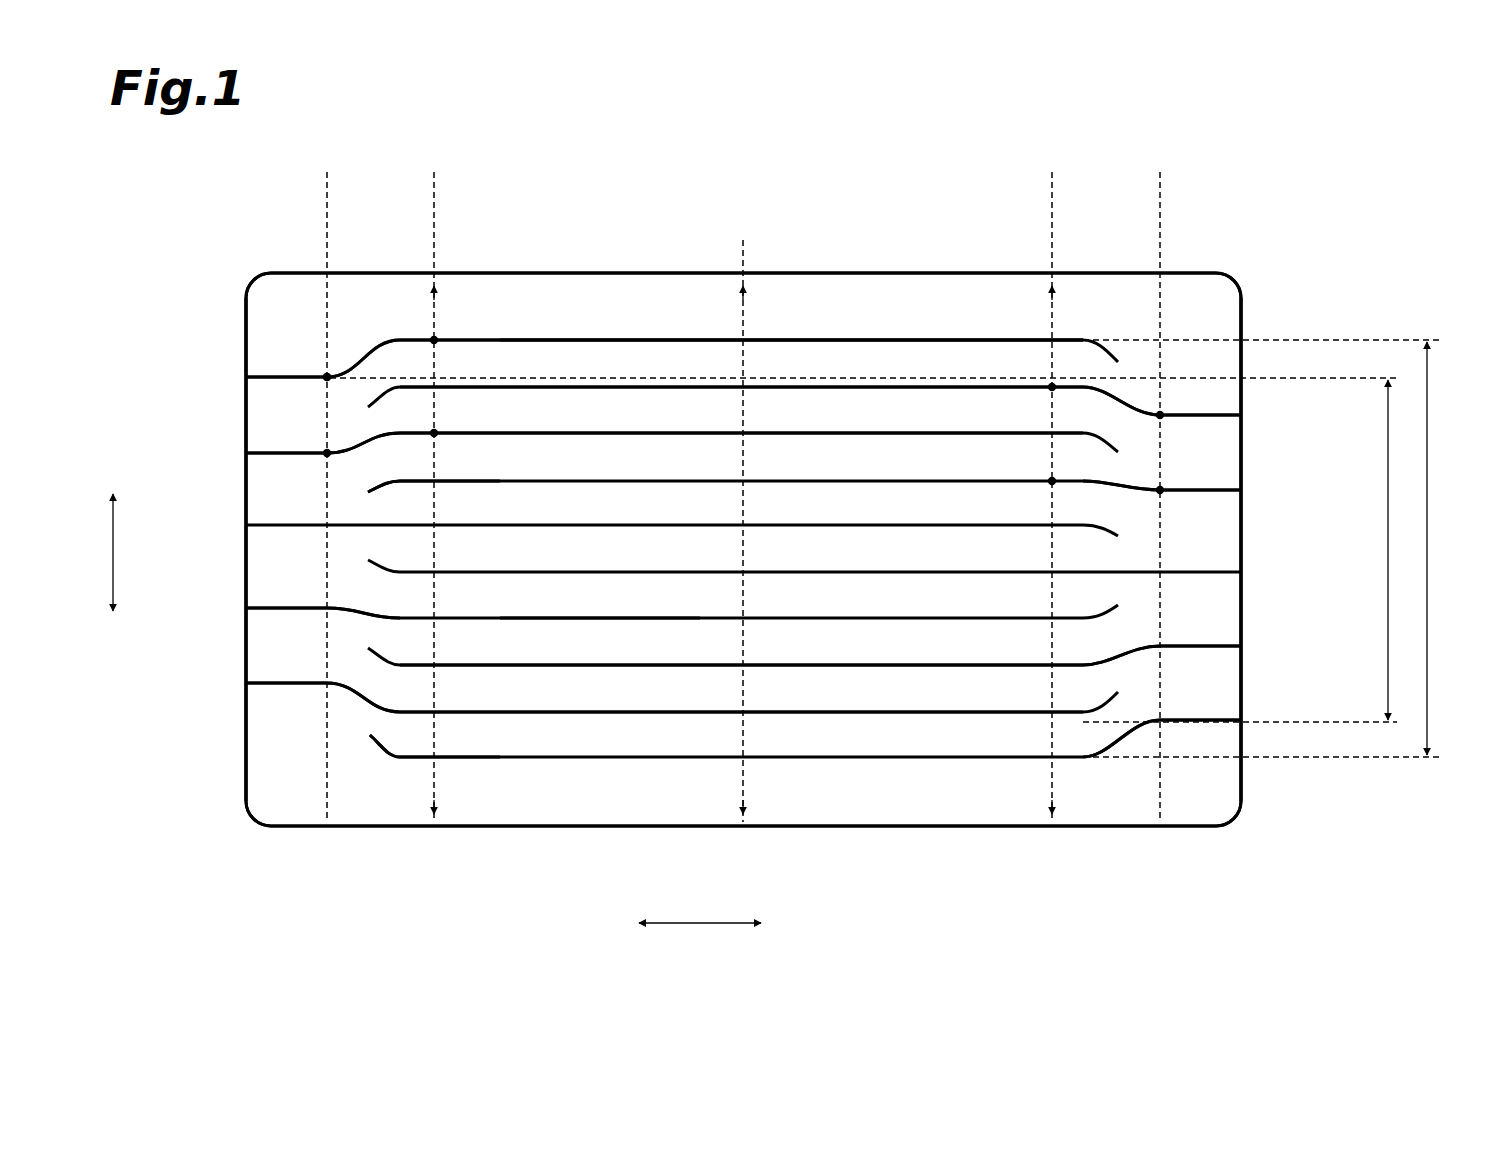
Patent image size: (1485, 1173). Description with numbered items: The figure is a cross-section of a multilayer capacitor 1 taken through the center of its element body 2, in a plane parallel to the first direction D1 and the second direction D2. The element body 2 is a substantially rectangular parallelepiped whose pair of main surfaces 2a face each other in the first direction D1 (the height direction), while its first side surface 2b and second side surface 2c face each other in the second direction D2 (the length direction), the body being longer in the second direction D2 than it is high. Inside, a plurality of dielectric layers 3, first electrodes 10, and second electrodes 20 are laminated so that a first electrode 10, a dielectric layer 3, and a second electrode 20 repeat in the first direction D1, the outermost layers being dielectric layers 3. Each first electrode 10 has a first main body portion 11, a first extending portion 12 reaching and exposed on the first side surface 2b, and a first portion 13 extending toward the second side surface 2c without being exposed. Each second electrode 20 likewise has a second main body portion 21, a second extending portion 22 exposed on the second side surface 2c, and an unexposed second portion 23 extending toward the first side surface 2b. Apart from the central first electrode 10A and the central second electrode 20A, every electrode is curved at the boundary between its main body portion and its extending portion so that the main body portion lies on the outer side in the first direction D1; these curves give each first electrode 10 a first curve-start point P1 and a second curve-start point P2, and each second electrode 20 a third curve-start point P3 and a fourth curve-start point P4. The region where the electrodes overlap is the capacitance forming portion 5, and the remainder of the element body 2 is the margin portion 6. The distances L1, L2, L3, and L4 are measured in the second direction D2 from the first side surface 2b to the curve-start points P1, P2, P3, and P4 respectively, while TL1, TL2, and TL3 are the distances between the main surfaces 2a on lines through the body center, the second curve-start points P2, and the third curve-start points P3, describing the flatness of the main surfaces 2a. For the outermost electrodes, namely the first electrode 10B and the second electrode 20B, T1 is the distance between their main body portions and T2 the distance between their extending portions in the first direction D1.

The multilayer capacitor 1 is at (1374, 202).
The element body 2 is at (1137, 272).
The main surfaces 2a is at (743, 275).
The first side surface 2b is at (246, 578).
The second side surface 2c is at (1241, 537).
The dielectric layers 3 is at (580, 407).
The capacitance forming portion 5 is at (950, 334).
The margin portion 6 is at (307, 366).
The first electrodes 10 is at (910, 430).
The first electrode located at a center 10A is at (300, 525).
The first electrode closest to one main surface 10B is at (858, 340).
The first main body portion 11 is at (820, 430).
The first extending portion 12 is at (303, 378).
The first portion 13 is at (1118, 362).
The second electrodes 20 is at (1032, 470).
The second electrode located at a center 20A is at (1205, 573).
The second electrode closest to the other main surface 20B is at (908, 760).
The second main body portion 21 is at (637, 450).
The second extending portion 22 is at (1210, 416).
The second portion 23 is at (368, 490).
The first curve-start point P1 is at (327, 453).
The second curve-start point P2 is at (434, 433).
The third curve-start point P3 is at (1052, 481).
The fourth curve-start point P4 is at (1160, 415).
The distance between the first side surface and the first curve-start points L1 is at (326, 481).
The distance between the first side surface and the second curve-start points L2 is at (433, 481).
The distance between the first side surface and the third curve-start points L3 is at (1051, 481).
The distance between the first side surface and the fourth curve-start points L4 is at (1159, 481).
The distance between the main surfaces at the center TL1 is at (748, 775).
The distance between the main surfaces through the second curve-start points TL2 is at (432, 790).
The distance between the main surfaces through the third curve-start points TL3 is at (1058, 775).
The distance between main body portions of the outermost electrodes T1 is at (1432, 680).
The distance between extending portions of the outermost electrodes T2 is at (1393, 667).
The first direction D1 is at (113, 562).
The second direction D2 is at (698, 926).